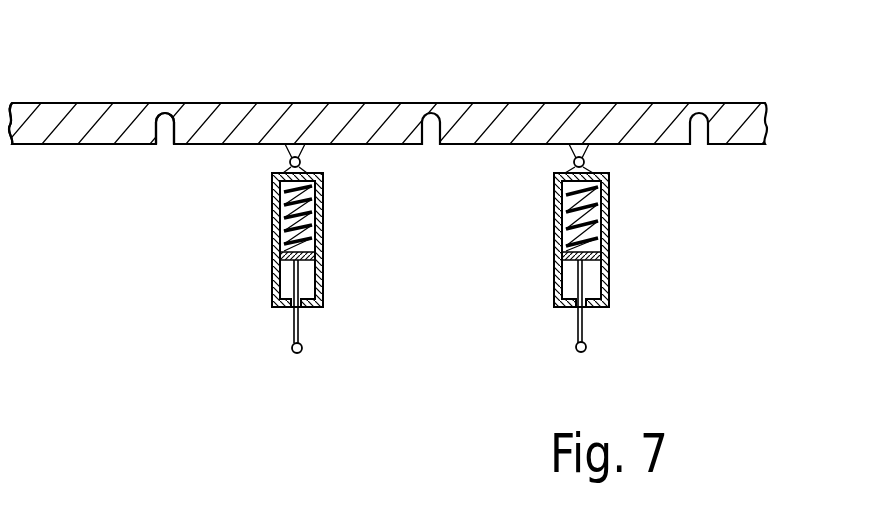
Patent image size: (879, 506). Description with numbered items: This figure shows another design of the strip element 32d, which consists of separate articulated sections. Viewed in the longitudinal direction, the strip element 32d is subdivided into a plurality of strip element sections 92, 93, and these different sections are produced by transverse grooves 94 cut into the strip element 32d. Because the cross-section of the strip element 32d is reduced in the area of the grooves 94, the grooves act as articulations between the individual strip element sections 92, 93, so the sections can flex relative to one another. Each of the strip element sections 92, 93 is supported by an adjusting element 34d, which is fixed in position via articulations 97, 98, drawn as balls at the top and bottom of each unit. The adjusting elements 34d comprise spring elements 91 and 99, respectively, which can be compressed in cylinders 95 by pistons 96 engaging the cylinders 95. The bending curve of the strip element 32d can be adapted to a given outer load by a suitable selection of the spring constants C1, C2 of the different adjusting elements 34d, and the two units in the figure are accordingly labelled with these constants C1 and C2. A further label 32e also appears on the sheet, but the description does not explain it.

The strip element 32d is at (513, 122).
The strip element section 92 is at (306, 122).
The strip element section 93 is at (47, 122).
The transverse groove 94 is at (175, 128).
The articulation 97 is at (301, 164).
The cylinder 95 is at (325, 273).
The spring element 99 is at (322, 216).
The piston 96 is at (273, 277).
The articulation 98 is at (302, 353).
The spring element 91 is at (620, 245).
The adjusting element 34d is at (680, 248).
The spring constant C1 is at (304, 307).
The spring constant C2 is at (637, 248).
The rail 32e is at (151, 493).